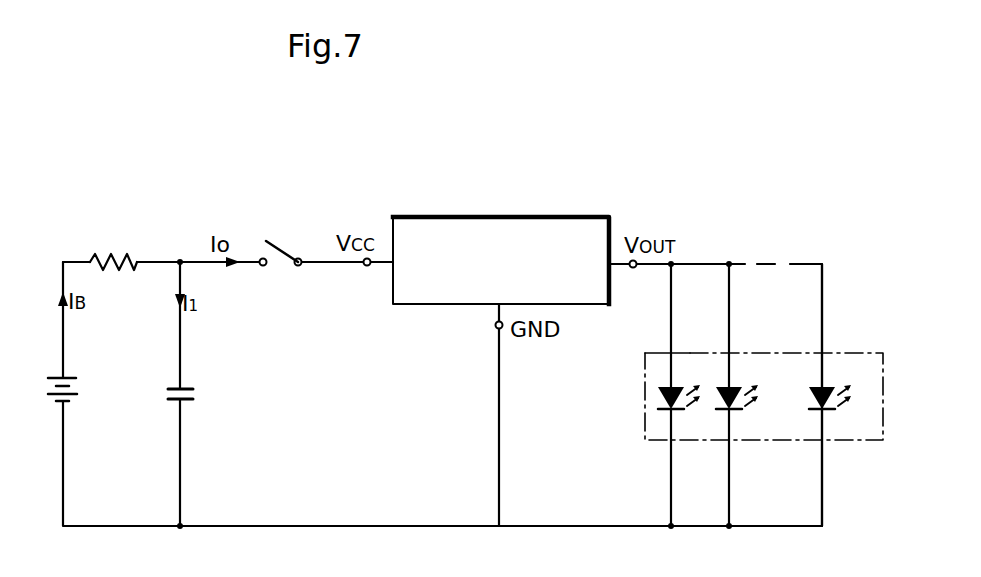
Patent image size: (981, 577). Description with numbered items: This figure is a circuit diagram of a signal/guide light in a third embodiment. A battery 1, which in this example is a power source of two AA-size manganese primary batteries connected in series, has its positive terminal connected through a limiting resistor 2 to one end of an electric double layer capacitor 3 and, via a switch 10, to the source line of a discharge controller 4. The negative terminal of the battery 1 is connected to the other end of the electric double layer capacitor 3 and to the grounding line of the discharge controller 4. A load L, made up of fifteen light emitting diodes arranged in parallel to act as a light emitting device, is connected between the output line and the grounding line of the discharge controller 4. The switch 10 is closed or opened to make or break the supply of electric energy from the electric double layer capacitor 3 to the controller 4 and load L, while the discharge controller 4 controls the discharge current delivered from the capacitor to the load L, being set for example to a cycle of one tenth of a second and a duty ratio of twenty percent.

The battery 1 is at (71, 376).
The limiting resistor 2 is at (115, 253).
The electric double layer capacitor 3 is at (186, 387).
The discharge controller 4 is at (546, 216).
The switch 10 is at (292, 242).
The load L is at (832, 352).